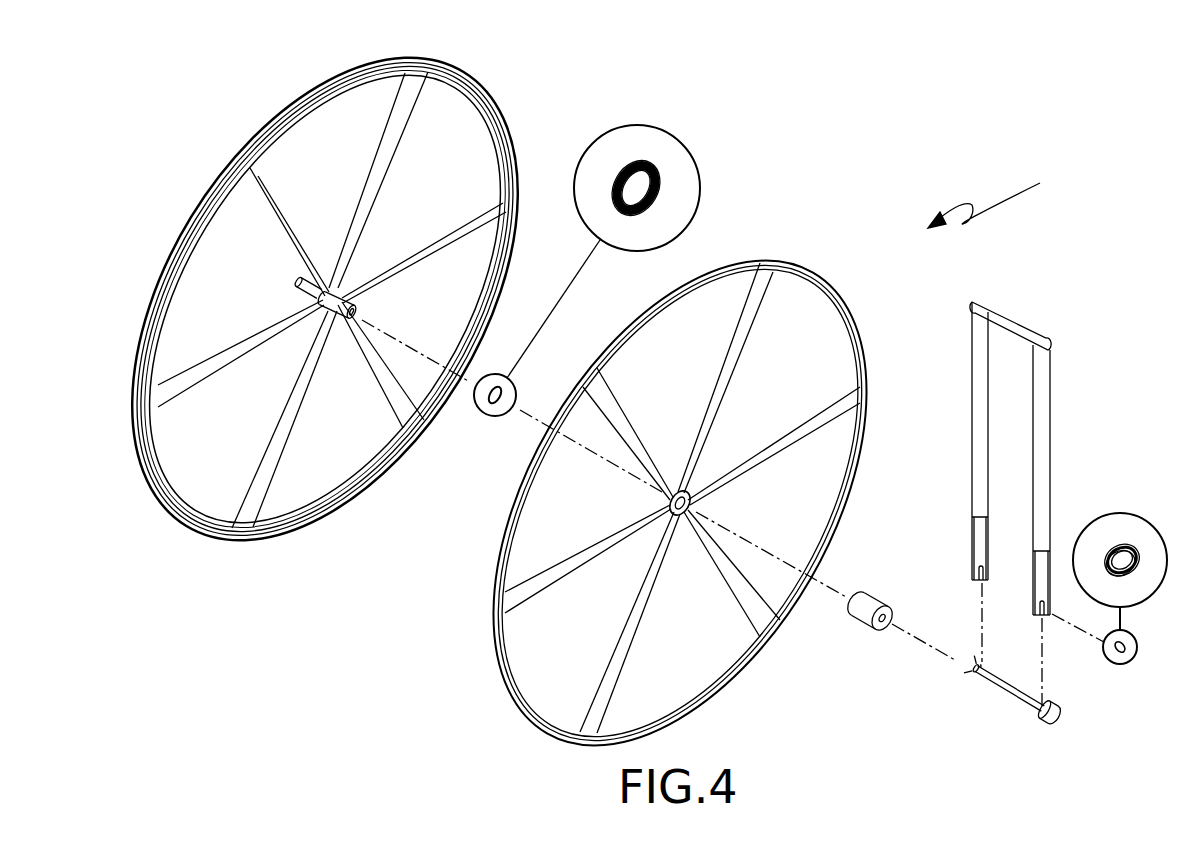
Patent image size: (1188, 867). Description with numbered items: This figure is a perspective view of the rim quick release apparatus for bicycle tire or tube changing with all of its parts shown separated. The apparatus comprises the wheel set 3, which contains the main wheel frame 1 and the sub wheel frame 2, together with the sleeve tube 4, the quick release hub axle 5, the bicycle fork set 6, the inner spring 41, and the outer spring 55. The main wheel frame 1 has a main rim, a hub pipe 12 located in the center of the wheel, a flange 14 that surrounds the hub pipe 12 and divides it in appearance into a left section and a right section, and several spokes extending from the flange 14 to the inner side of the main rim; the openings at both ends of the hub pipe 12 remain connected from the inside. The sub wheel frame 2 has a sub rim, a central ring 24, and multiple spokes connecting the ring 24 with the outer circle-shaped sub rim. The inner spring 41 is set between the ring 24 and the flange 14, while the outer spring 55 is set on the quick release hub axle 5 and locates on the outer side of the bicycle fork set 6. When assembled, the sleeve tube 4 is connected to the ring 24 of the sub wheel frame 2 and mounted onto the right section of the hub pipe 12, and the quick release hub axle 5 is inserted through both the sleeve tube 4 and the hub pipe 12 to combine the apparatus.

The main wheel frame 1 is at (497, 122).
The hub pipe 12 is at (355, 307).
The flange 14 is at (330, 290).
The inner spring 41 is at (655, 176).
The sub wheel frame 2 is at (850, 298).
The ring 24 is at (690, 504).
The sleeve tube 4 is at (866, 628).
The wheel set 3 is at (990, 196).
The bicycle fork set 6 is at (1043, 375).
The outer spring 55 is at (1132, 548).
The quick release hub axle 5 is at (1005, 692).